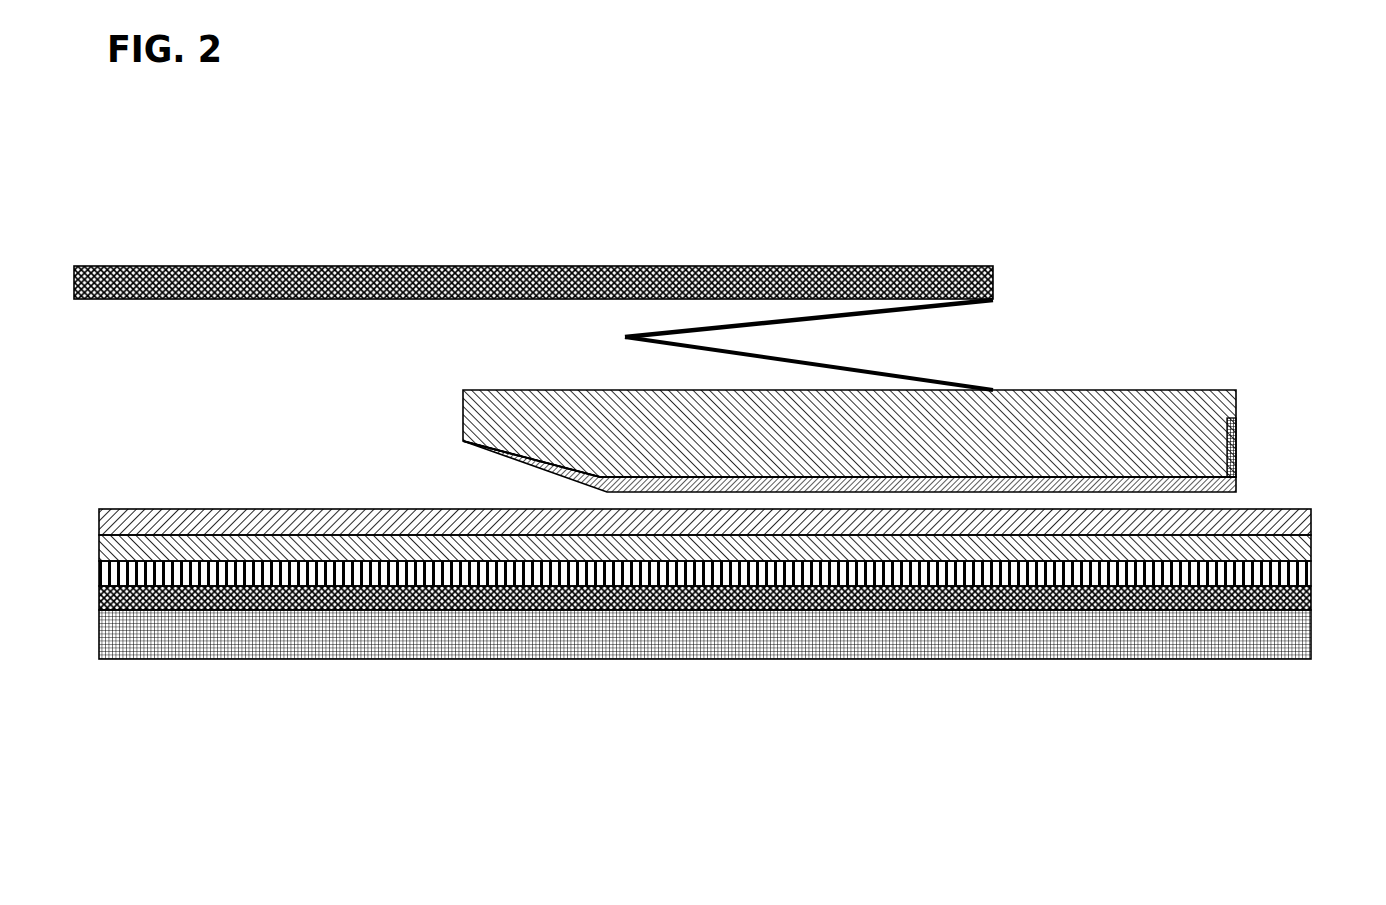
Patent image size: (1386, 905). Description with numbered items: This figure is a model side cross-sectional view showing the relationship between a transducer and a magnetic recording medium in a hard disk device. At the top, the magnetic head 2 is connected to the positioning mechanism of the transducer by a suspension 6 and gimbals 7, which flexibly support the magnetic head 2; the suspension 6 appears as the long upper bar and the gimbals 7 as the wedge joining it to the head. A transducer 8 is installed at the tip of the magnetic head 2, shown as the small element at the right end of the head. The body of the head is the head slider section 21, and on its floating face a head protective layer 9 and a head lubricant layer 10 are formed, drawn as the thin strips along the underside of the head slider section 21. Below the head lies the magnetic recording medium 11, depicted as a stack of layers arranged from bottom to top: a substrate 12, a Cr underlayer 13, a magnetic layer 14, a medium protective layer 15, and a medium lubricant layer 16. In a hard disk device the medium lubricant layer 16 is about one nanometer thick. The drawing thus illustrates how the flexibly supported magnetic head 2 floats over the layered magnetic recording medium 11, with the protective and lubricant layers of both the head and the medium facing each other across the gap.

The magnetic head 2 is at (923, 276).
The suspension 6 is at (465, 263).
The gimbals 7 is at (746, 330).
The transducer 8 is at (1281, 335).
The head protective layer 9 is at (1067, 477).
The head lubricant layer 10 is at (1117, 490).
The magnetic recording medium 11 is at (705, 696).
The substrate 12 is at (373, 805).
The Cr underlayer 13 is at (830, 600).
The magnetic layer 14 is at (725, 570).
The medium protective layer 15 is at (648, 552).
The medium lubricant layer 16 is at (575, 530).
The head slider section 21 is at (1010, 420).